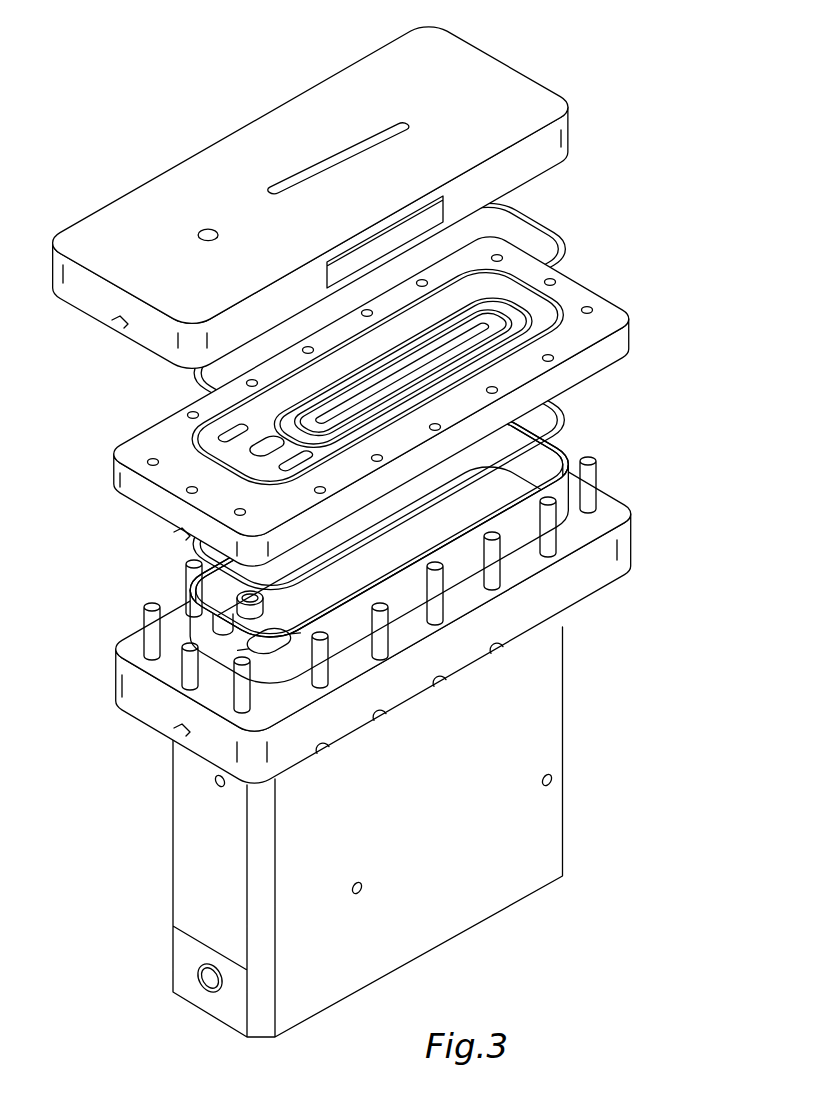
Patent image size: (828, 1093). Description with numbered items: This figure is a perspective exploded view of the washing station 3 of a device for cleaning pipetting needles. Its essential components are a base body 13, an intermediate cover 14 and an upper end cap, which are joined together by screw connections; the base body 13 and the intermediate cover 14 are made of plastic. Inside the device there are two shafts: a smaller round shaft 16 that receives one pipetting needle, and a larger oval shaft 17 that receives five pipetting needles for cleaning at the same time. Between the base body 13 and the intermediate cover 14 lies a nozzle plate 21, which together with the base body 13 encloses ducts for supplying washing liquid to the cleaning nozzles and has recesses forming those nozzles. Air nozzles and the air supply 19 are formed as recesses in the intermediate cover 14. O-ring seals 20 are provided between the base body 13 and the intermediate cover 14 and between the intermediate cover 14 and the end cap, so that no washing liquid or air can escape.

The washing station 3 is at (371, 598).
The base body 13 is at (562, 630).
The intermediate cover 14 is at (352, 401).
The shaft for a pipetting needle 16 is at (208, 235).
The shaft for a plurality of pipetting needles 17 is at (338, 158).
The air supply 19 is at (192, 437).
The seal 20 is at (568, 253).
The nozzle plate 21 is at (269, 641).